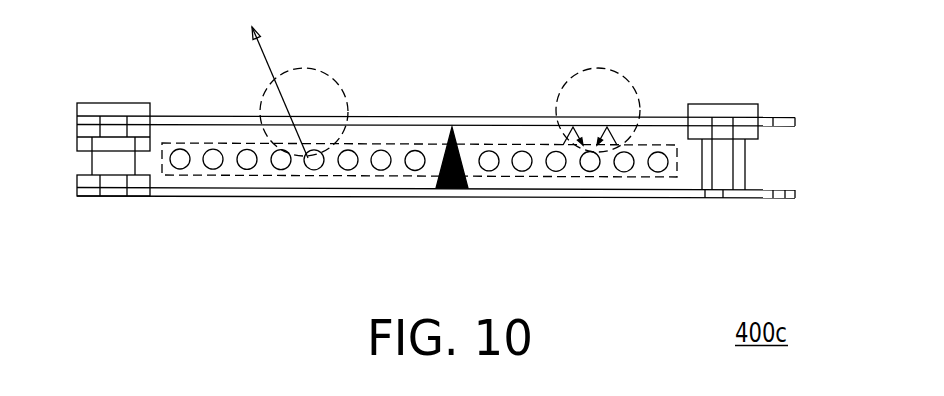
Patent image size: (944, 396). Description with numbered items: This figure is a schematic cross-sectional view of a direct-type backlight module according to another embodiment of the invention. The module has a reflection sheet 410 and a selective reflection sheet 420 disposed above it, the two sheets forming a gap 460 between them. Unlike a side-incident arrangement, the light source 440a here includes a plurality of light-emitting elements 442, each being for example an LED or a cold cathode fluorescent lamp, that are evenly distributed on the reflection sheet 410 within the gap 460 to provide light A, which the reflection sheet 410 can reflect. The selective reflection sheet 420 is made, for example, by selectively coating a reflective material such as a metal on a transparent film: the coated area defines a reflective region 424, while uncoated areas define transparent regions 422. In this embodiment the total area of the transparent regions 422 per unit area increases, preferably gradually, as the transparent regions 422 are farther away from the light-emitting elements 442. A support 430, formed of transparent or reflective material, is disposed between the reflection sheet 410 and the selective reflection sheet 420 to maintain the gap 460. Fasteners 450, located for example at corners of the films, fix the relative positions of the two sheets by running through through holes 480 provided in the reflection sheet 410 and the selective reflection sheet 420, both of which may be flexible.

The reflection sheet 410 is at (795, 193).
The selective reflection sheet 420 is at (795, 122).
The transparent regions 422 is at (345, 90).
The reflective region 424 is at (641, 80).
The support 430 is at (470, 181).
The light source 440a is at (193, 178).
The light-emitting elements 442 is at (247, 160).
The fasteners 450 is at (110, 163).
The gap 460 is at (153, 165).
The through holes 480 is at (103, 121).
The light A is at (300, 131).